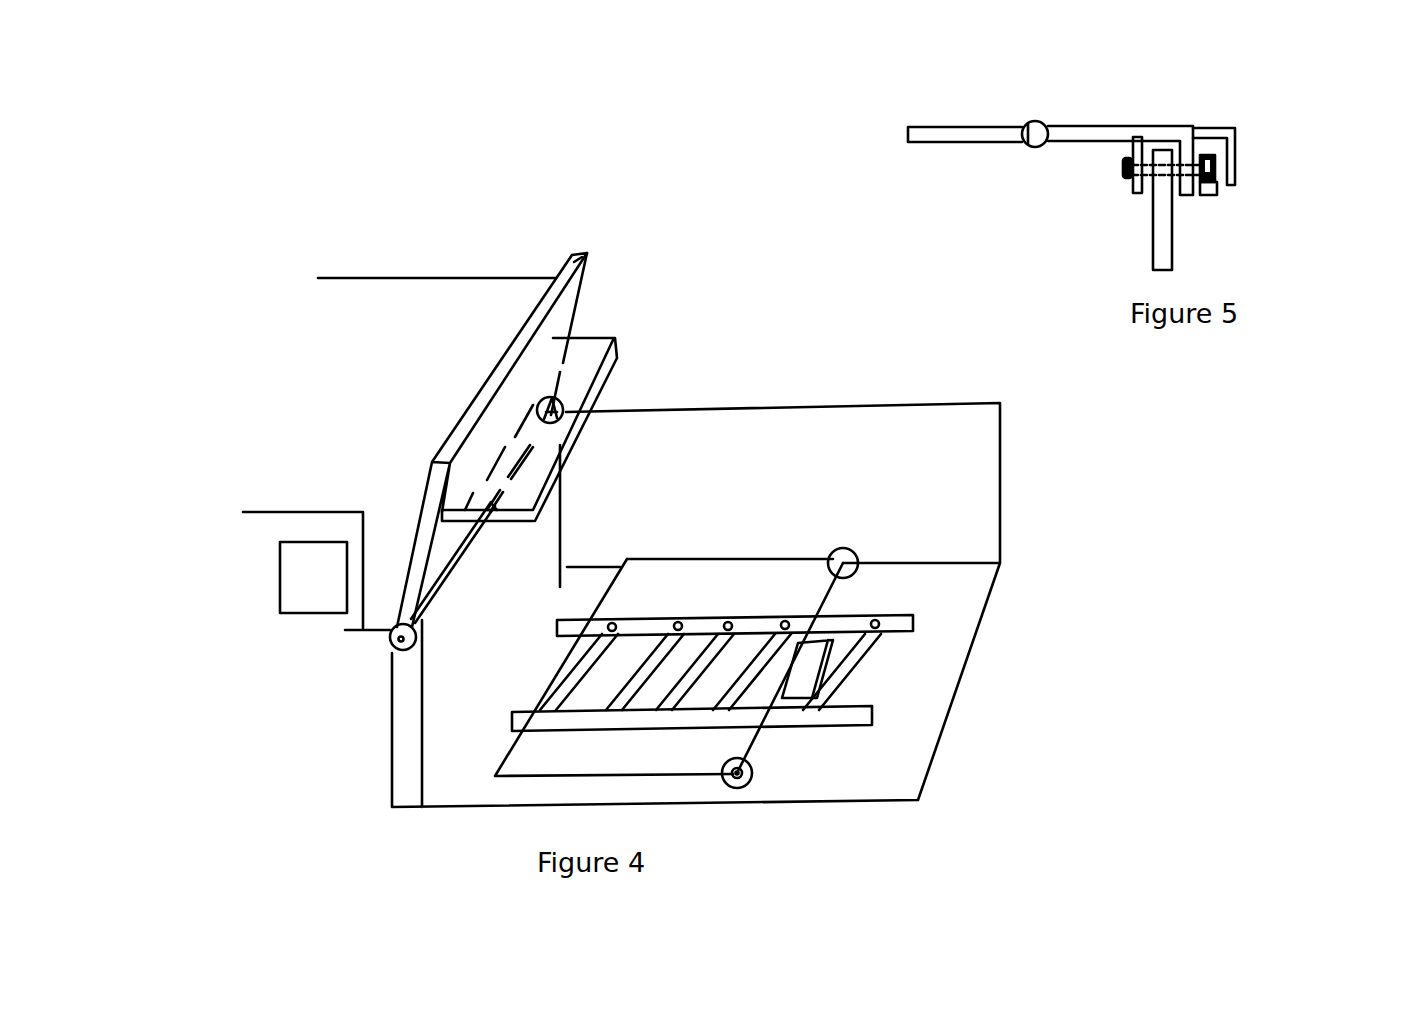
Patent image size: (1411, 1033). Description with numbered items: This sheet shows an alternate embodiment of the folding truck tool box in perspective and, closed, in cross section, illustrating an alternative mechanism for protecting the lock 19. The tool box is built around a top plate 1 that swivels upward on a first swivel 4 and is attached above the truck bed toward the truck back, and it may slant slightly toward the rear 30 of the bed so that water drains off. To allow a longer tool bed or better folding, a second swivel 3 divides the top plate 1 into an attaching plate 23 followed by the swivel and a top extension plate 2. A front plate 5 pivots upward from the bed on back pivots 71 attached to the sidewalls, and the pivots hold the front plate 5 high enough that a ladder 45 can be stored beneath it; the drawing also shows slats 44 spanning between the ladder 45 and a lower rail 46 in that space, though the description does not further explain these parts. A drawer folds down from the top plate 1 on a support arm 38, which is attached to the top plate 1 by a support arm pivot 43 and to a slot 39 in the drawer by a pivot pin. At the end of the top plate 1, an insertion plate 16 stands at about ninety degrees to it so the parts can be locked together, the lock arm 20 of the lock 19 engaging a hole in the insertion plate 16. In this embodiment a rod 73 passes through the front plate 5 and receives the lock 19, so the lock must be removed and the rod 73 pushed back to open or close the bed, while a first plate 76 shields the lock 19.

In FIG. 4, the top plate 1 is at (565, 318).
In FIG. 5, the top extension plate 2 is at (1093, 134).
In FIG. 5, the second swivel 3 is at (1035, 121).
In FIG. 4, the first swivel 4 is at (390, 647).
In FIG. 5, the front plate 5 is at (1163, 235).
In FIG. 4, the insertion plate 16 is at (586, 254).
In FIG. 5, the lock 19 is at (1213, 195).
In FIG. 5, the lock arm 20 is at (1210, 188).
In FIG. 5, the attaching plate 23 is at (923, 128).
In FIG. 4, the rear 30 is at (975, 654).
In FIG. 4, the support arm 38 is at (436, 520).
In FIG. 4, the slot 39 is at (498, 524).
In FIG. 4, the support arm pivot 43 is at (438, 518).
In FIG. 4, the slat 44 is at (700, 682).
In FIG. 4, the ladder 45 is at (888, 620).
In FIG. 4, the lower rail 46 is at (838, 688).
In FIG. 4, the back pivots 71 is at (853, 557).
In FIG. 5, the rod 73 is at (1127, 163).
In FIG. 5, the first plate 76 is at (1233, 157).